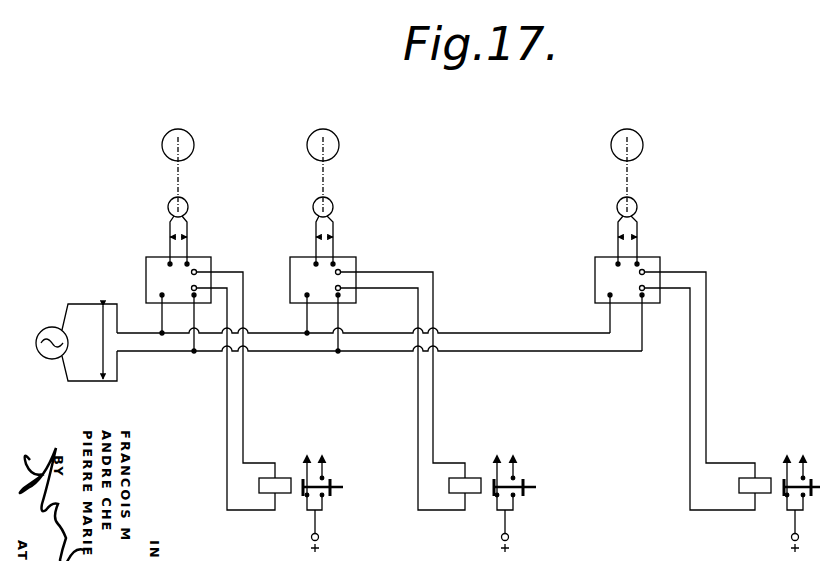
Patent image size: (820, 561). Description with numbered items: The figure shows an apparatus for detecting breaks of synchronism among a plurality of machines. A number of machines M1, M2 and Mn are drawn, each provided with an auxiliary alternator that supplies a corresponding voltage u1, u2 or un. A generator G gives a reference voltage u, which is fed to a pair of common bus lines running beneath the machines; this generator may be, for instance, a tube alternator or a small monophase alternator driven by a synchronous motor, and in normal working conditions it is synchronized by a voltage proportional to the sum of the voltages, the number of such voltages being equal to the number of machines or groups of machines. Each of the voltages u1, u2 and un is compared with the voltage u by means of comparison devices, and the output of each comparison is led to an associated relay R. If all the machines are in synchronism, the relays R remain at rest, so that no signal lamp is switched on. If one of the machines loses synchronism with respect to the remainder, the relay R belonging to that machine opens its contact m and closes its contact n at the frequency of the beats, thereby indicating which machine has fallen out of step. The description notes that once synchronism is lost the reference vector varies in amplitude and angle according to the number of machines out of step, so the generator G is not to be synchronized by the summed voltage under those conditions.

The machine M1 is at (178, 157).
The machine M2 is at (323, 157).
The machine Mn is at (627, 158).
The voltage u1 is at (178, 240).
The voltage u2 is at (324, 240).
The voltage un is at (627, 240).
The generator G is at (52, 332).
The voltage u is at (97, 342).
The relay R is at (515, 485).
The contact m is at (536, 476).
The contact n is at (568, 468).